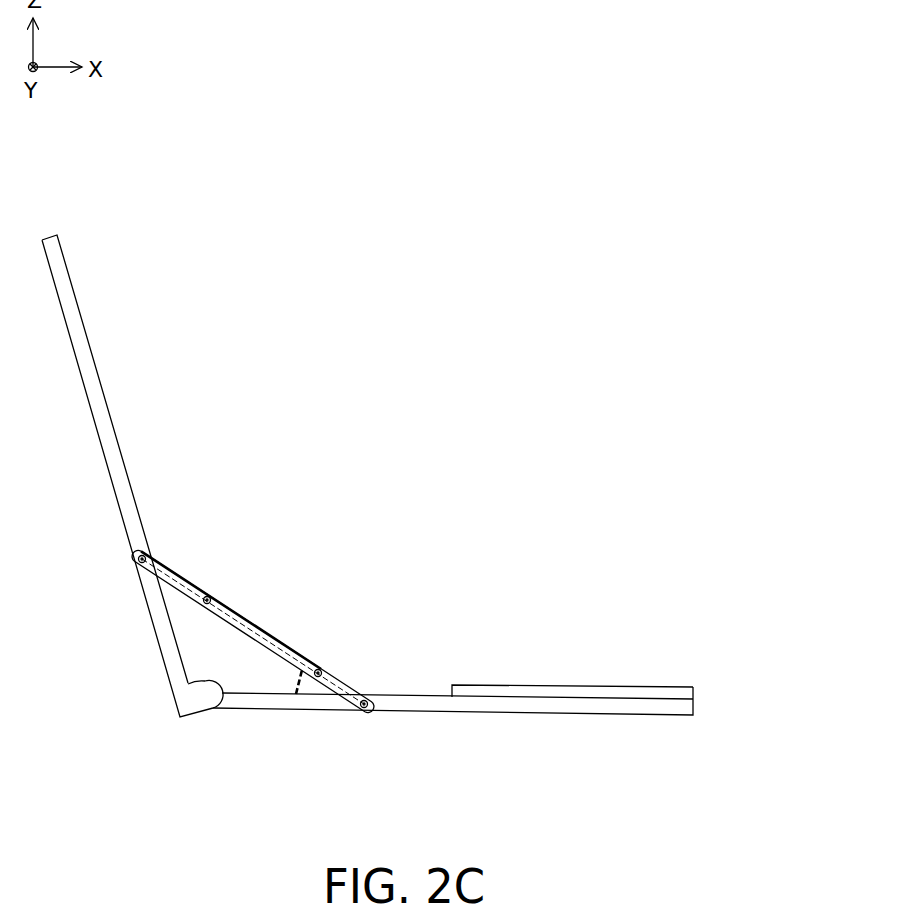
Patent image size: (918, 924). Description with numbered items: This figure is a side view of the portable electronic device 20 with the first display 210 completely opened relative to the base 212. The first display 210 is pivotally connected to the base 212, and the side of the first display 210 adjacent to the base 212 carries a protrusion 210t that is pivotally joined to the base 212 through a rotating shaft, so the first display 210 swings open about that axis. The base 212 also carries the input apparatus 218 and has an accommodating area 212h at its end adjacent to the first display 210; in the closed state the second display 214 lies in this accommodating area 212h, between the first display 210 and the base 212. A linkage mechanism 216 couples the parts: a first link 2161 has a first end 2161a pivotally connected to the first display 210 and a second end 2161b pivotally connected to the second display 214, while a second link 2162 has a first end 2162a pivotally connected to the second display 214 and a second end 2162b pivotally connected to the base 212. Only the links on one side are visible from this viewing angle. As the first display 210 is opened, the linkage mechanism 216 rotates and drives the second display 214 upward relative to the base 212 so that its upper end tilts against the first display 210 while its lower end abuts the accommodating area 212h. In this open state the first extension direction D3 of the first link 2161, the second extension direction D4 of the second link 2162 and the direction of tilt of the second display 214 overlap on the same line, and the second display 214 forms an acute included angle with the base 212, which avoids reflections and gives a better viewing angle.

The portable electronic device 20 is at (797, 151).
The first display 210 is at (86, 270).
The protrusion 210t is at (203, 697).
The base 212 is at (672, 712).
The accommodating area 212h is at (424, 687).
The second display 214 is at (404, 614).
The linkage mechanism 216 is at (404, 614).
The first link 2161 is at (167, 587).
The first end of the first link 2161a is at (144, 556).
The second end of the first link 2161b is at (208, 597).
The second link 2162 is at (337, 695).
The first end of the second link 2162a is at (320, 670).
The second end of the second link 2162b is at (366, 702).
The input apparatus 218 is at (678, 693).
The first extension direction D3 is at (136, 554).
The second extension direction D4 is at (286, 653).